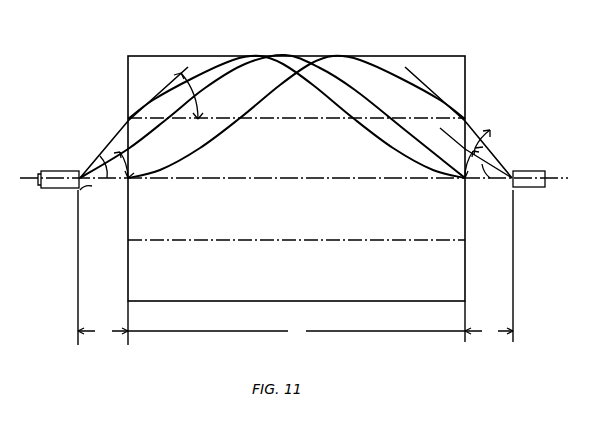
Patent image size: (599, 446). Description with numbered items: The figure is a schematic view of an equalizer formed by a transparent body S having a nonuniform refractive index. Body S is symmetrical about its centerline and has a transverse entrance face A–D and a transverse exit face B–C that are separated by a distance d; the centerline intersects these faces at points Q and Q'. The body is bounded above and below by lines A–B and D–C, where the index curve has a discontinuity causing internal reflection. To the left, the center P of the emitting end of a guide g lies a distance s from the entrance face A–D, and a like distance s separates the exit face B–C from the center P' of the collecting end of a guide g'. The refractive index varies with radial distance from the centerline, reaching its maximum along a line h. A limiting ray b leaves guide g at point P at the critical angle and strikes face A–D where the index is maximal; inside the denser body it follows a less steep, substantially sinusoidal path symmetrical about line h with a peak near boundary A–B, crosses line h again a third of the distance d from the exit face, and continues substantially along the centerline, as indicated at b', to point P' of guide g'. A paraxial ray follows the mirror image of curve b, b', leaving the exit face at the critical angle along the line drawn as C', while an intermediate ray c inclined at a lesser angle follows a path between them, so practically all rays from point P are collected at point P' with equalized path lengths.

The transparent body S is at (144, 60).
The corner A of entrance face A is at (116, 55).
The corner B of exit face B is at (473, 47).
The corner C of exit face C is at (473, 295).
The corner D of entrance face D is at (115, 300).
The line h is at (290, 122).
The limiting light ray b is at (272, 117).
The inner ray c is at (100, 148).
The continuation of limiting ray b' is at (320, 132).
The inner ray c' C' is at (487, 153).
The guide g is at (46, 164).
The collecting guide g' is at (539, 194).
The center of emitting end P is at (48, 202).
The entrance intersection point Q is at (143, 193).
The center of collecting end P' is at (542, 156).
The exit intersection point Q' is at (440, 195).
The guide spacing distance s is at (295, 267).
The body length d is at (296, 331).